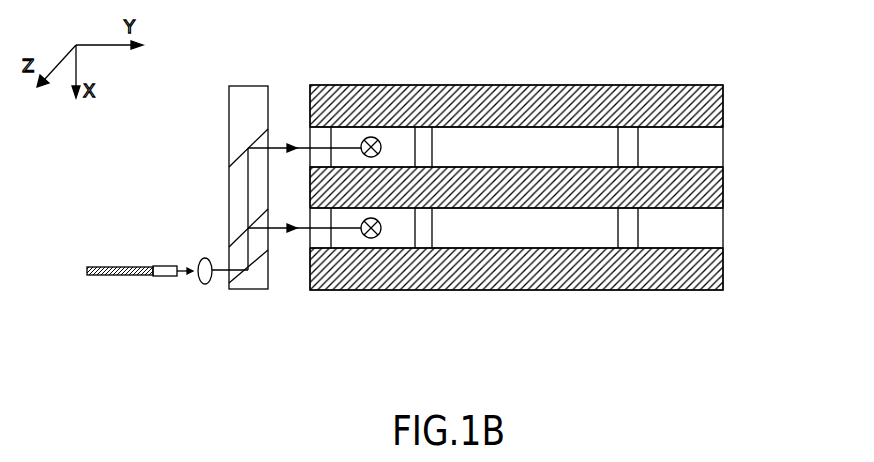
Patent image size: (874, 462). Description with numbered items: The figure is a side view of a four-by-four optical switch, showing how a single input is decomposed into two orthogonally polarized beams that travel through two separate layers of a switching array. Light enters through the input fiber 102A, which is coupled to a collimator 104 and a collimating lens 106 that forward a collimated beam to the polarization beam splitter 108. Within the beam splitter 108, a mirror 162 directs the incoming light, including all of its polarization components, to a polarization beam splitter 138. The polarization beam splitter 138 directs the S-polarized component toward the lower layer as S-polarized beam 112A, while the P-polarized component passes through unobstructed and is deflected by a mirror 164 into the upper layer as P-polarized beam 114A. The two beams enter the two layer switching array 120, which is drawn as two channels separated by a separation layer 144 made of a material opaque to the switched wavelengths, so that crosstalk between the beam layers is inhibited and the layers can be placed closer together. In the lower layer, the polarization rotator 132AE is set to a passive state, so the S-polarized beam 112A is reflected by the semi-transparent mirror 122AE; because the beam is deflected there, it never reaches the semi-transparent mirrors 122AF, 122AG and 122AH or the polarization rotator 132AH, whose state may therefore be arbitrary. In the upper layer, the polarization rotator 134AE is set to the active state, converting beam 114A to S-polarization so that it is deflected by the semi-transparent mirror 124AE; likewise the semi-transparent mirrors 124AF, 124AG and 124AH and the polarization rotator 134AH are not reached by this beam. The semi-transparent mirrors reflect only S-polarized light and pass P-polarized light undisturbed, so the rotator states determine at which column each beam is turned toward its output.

The input fiber 102A is at (117, 273).
The collimator 104 is at (165, 265).
The collimating lens 106 is at (202, 282).
The polarization beam splitter 108 is at (250, 86).
The S-polarized beam 112A is at (304, 247).
The P-polarized beam 114A is at (303, 142).
The two layer switching array 120 is at (680, 85).
The semi-transparent mirror 122AE is at (395, 237).
The semi-transparent mirror 122AF is at (468, 237).
The semi-transparent mirror 122AG is at (563, 237).
The semi-transparent mirror 122AH is at (712, 232).
The semi-transparent mirror 124AE is at (395, 137).
The semi-transparent mirror 124AF is at (468, 137).
The semi-transparent mirror 124AG is at (563, 137).
The semi-transparent mirror 124AH is at (712, 147).
The polarization rotator 132AE is at (322, 237).
The polarization rotator 132AH is at (630, 237).
The polarization rotator 134AE is at (322, 137).
The polarization rotator 134AH is at (626, 137).
The polarization beam splitter 138 is at (236, 229).
The separation layer 144 is at (712, 188).
The mirror 162 is at (240, 290).
The mirror 164 is at (236, 148).